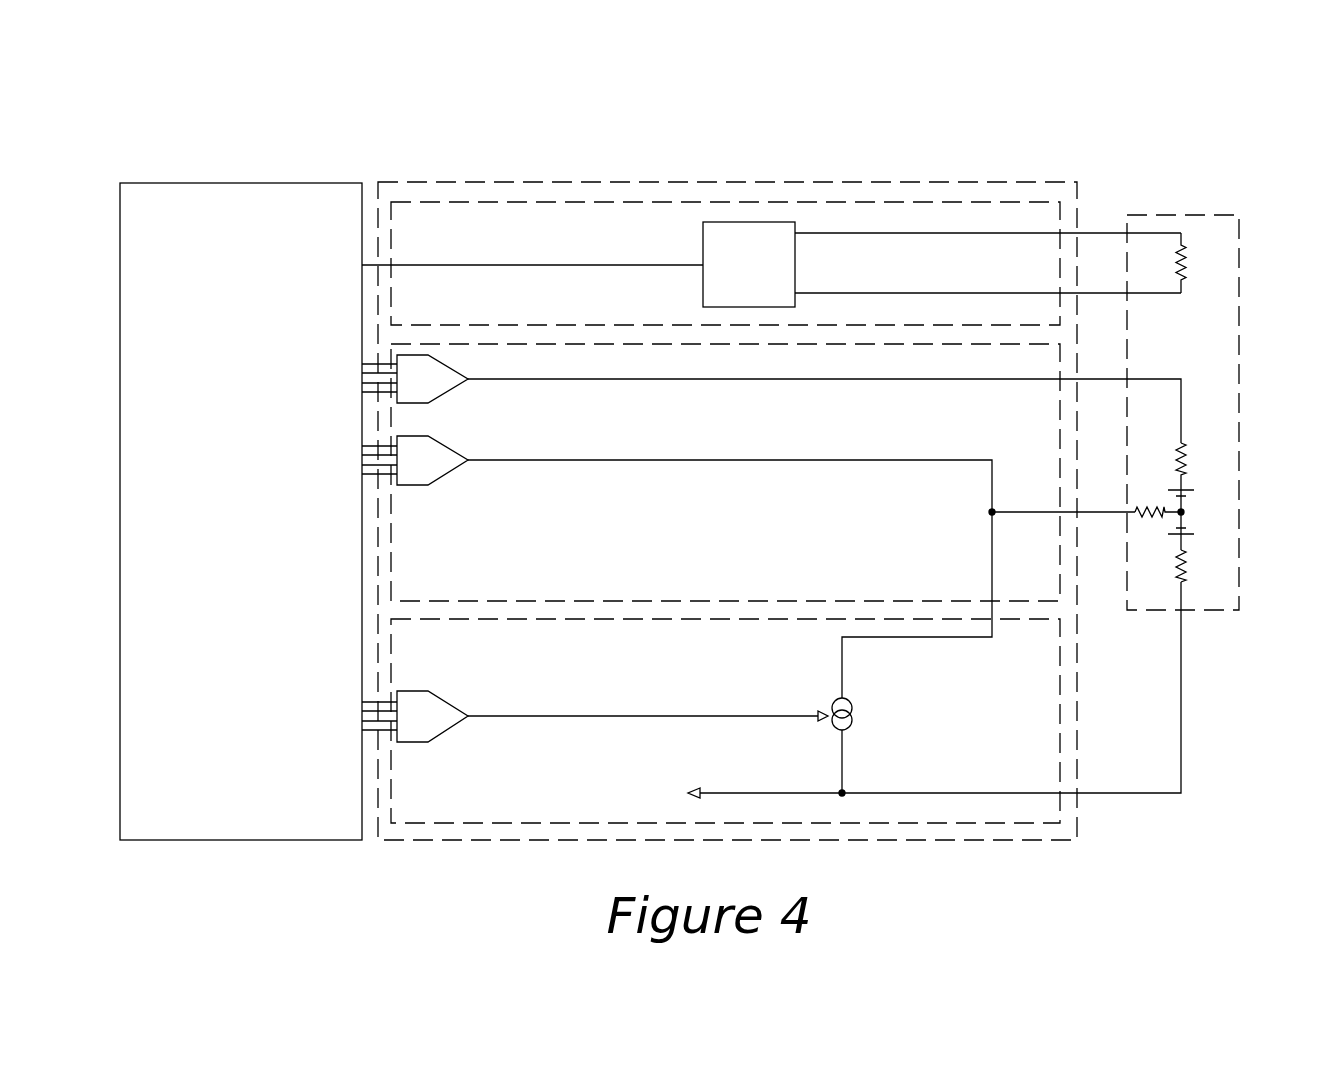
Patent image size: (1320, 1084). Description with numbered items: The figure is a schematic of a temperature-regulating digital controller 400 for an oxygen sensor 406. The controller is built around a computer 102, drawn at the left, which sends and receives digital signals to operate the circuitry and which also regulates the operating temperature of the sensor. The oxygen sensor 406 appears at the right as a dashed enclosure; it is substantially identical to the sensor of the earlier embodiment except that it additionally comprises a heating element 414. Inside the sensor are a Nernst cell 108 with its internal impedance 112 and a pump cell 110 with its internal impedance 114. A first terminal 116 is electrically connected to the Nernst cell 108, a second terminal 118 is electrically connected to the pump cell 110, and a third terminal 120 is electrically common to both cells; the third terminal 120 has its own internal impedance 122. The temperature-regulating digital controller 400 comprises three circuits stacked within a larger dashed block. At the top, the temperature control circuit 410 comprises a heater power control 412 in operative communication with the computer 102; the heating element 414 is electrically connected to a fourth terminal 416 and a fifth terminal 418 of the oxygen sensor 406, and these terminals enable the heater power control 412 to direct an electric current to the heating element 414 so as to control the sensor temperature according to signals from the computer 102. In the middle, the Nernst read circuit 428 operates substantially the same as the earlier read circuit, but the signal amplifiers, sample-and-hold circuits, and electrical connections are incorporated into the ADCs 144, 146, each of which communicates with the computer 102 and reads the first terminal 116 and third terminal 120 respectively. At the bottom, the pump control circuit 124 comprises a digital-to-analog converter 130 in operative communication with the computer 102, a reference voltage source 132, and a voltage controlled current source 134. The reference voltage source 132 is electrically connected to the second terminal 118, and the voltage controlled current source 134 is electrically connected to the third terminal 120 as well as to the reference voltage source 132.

The temperature-regulating digital controller 400 is at (775, 138).
The computer 102 is at (217, 394).
The temperature control circuit 410 is at (589, 308).
The heater power control 412 is at (703, 234).
The fourth terminal 416 is at (1037, 233).
The fifth terminal 418 is at (850, 293).
The oxygen sensor 406 is at (1181, 215).
The heating element 414 is at (1183, 264).
The Nernst read circuit 428 is at (581, 584).
The ADC 144 is at (440, 399).
The ADC 146 is at (413, 485).
The first terminal 116 is at (724, 380).
The internal impedance 112 is at (1184, 455).
The Nernst cell 108 is at (1184, 490).
The pump cell 110 is at (1186, 533).
The internal impedance 114 is at (1186, 565).
The second terminal 118 is at (1183, 678).
The third terminal 120 is at (1020, 510).
The internal impedance 122 is at (1150, 518).
The pump control circuit 124 is at (579, 813).
The digital-to-analog converter 130 is at (413, 742).
The voltage controlled current source 134 is at (852, 701).
The reference voltage source 132 is at (694, 792).